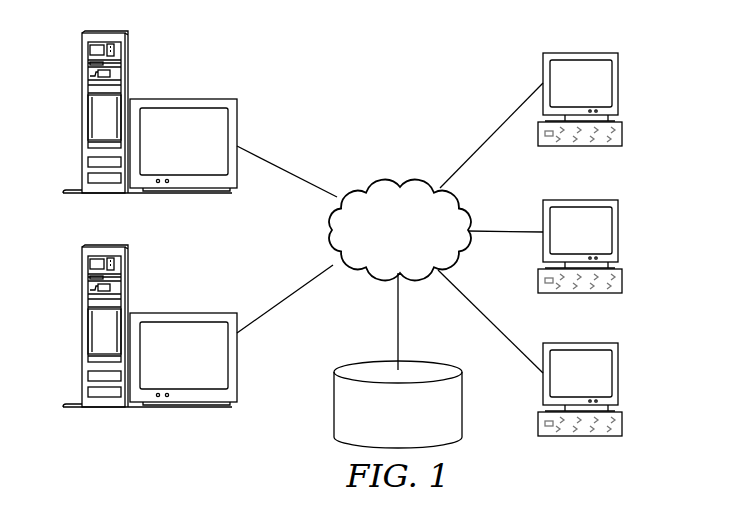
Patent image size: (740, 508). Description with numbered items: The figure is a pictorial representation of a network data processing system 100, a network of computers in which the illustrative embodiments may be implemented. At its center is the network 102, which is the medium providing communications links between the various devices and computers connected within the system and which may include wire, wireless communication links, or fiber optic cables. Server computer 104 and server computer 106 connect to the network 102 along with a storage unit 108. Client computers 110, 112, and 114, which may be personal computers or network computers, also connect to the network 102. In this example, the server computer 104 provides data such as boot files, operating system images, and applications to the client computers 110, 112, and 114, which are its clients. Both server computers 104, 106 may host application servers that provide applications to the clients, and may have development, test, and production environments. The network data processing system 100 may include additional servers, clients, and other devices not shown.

The network data processing system 100 is at (453, 69).
The network 102 is at (368, 181).
The server computer 104 is at (82, 115).
The server computer 106 is at (82, 329).
The storage unit 108 is at (333, 413).
The client computer 110 is at (620, 82).
The client computer 112 is at (620, 229).
The client computer 114 is at (620, 373).